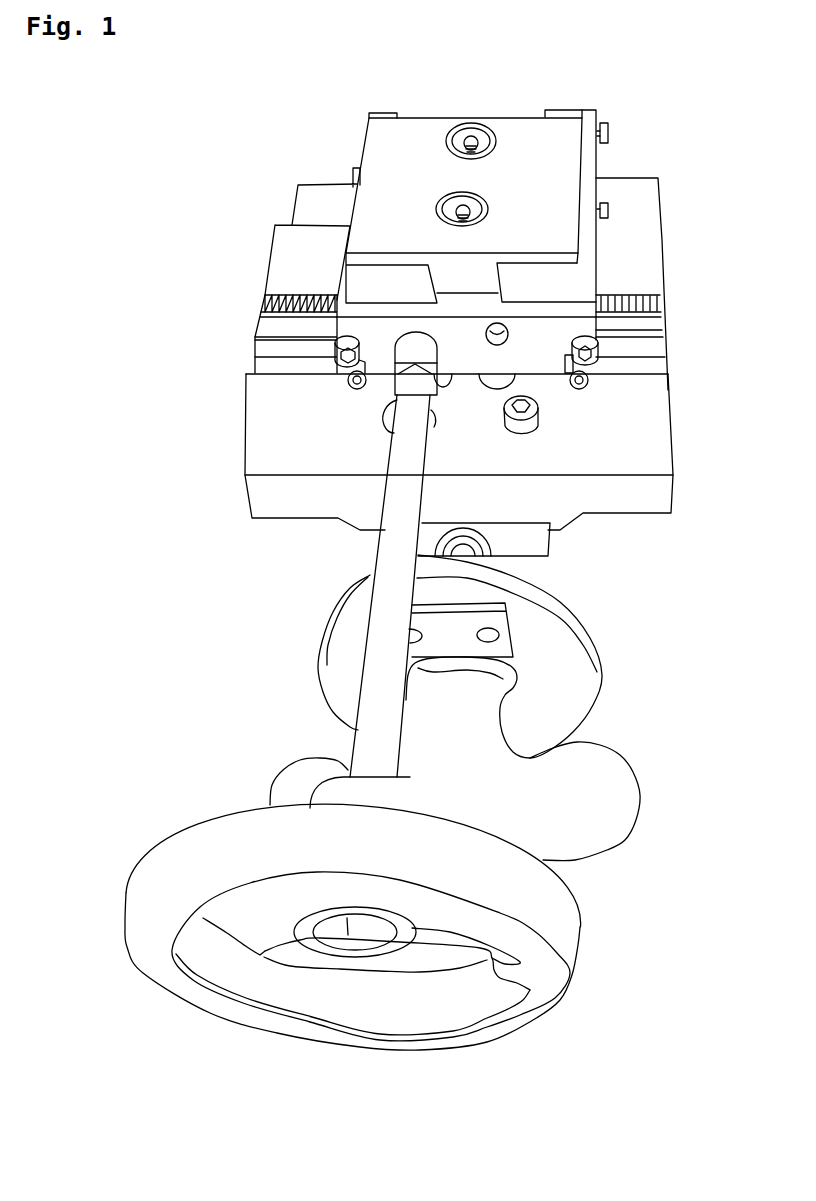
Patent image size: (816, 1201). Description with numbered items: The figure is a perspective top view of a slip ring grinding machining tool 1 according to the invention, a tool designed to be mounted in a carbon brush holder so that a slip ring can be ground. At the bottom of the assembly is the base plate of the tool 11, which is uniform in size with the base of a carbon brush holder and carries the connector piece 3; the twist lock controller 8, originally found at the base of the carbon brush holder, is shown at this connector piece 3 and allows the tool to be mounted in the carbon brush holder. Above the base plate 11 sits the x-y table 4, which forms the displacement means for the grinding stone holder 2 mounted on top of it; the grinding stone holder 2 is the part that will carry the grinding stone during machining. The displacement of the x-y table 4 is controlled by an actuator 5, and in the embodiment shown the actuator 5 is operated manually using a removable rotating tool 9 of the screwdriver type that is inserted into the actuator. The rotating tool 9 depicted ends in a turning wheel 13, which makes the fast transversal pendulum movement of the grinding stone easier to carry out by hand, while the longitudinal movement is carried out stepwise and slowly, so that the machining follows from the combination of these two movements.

The slip ring grinding machining tool 1 is at (255, 141).
The grinding stone holder 2 is at (530, 140).
The connector piece 3 is at (528, 539).
The x-y table 4 is at (630, 240).
The actuator 5 is at (405, 352).
The controller 8 is at (567, 688).
The removable rotating tool 9 is at (390, 527).
The base plate of the tool 11 is at (640, 453).
The turning wheel 13 is at (553, 927).